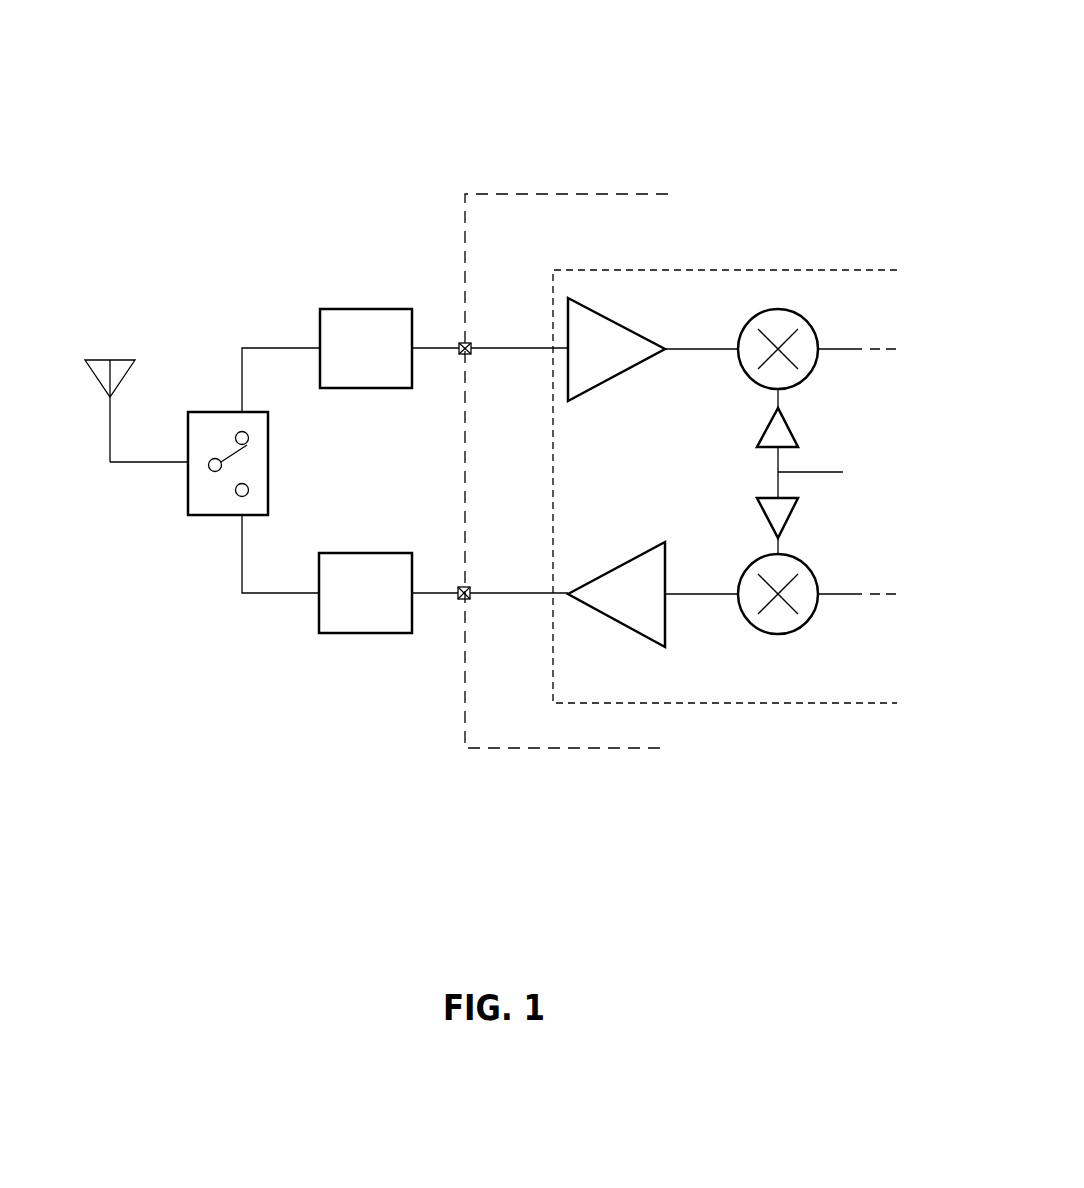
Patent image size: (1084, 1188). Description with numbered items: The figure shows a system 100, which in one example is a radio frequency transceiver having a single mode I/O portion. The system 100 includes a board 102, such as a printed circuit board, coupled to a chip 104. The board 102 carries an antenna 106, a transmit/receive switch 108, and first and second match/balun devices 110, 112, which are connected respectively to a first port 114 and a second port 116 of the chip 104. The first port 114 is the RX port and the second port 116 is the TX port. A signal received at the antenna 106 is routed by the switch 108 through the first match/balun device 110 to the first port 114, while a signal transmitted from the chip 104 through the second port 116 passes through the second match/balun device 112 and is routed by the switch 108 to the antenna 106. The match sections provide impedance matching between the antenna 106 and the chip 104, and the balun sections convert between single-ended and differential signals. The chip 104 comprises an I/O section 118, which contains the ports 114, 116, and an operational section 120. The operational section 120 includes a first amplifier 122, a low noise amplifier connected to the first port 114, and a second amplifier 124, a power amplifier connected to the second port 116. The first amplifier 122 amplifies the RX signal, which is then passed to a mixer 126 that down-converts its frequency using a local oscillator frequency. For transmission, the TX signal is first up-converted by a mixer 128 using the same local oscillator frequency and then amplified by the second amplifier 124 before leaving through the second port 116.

The system 100 is at (814, 122).
The board 102 is at (298, 246).
The chip 104 is at (558, 194).
The antenna 106 is at (122, 360).
The switch 108 is at (205, 412).
The first match/balun device 110 is at (368, 388).
The second match/balun device 112 is at (362, 553).
The first port 114 is at (463, 354).
The second port 116 is at (460, 588).
The I/O section 118 is at (499, 612).
The operational section 120 is at (790, 270).
The first amplifier 122 is at (610, 380).
The second amplifier 124 is at (630, 558).
The mixer 126 is at (817, 340).
The mixer 128 is at (795, 557).